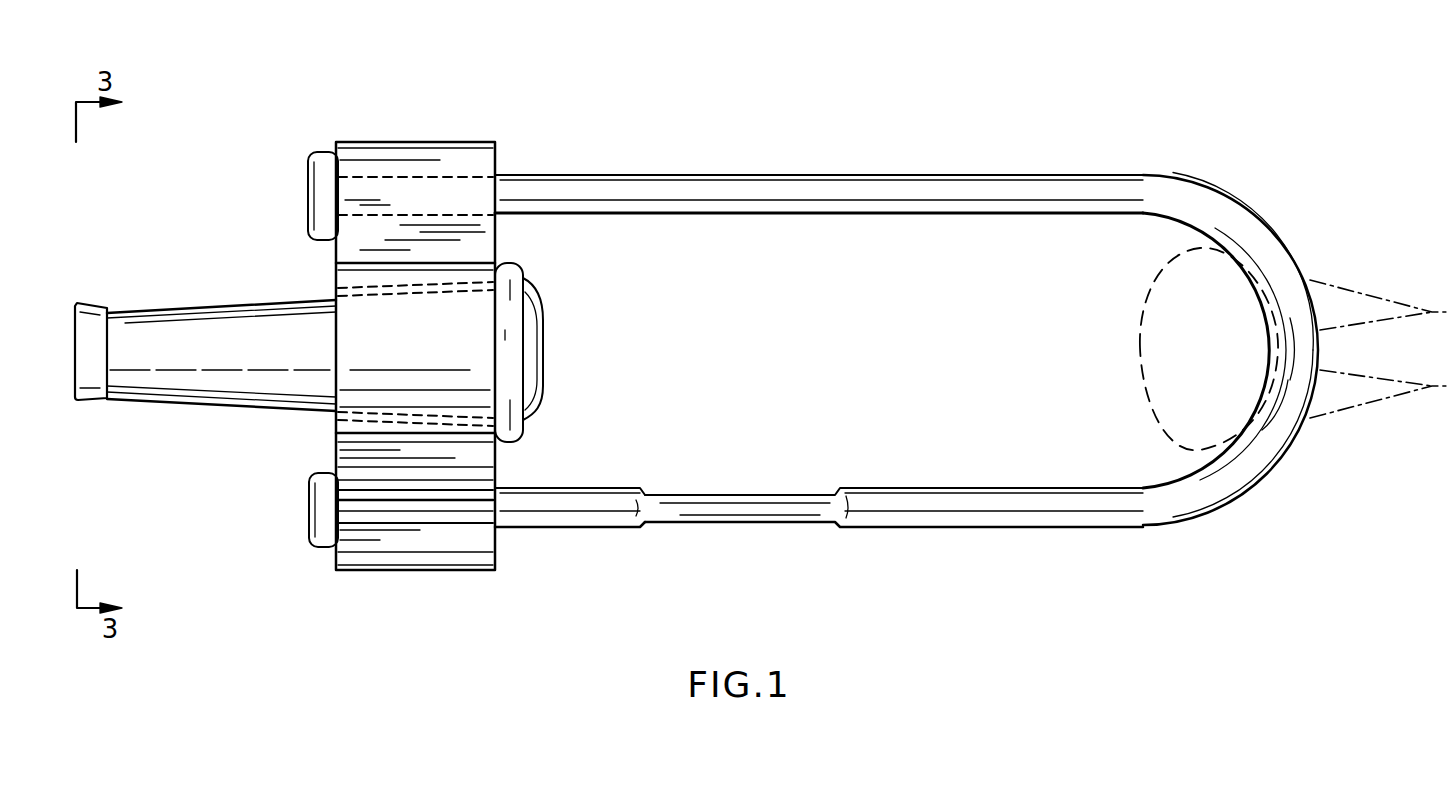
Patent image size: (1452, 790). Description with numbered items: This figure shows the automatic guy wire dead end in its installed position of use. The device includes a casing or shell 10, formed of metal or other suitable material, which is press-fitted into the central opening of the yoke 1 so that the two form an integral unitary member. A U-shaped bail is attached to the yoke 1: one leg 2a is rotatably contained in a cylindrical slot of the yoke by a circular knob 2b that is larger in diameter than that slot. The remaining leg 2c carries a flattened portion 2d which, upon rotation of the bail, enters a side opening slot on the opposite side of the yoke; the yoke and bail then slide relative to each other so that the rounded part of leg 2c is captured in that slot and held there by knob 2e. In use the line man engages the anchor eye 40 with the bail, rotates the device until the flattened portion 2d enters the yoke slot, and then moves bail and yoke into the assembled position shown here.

The yoke 1 is at (419, 144).
The leg of the U-shaped bail 2a is at (781, 193).
The knob 2b is at (320, 190).
The remaining leg of the bail 2c is at (590, 507).
The flattened portion of leg 2d is at (767, 507).
The knob 2e is at (318, 515).
The casing or shell 10 is at (268, 344).
The anchor eye 40 is at (1195, 275).